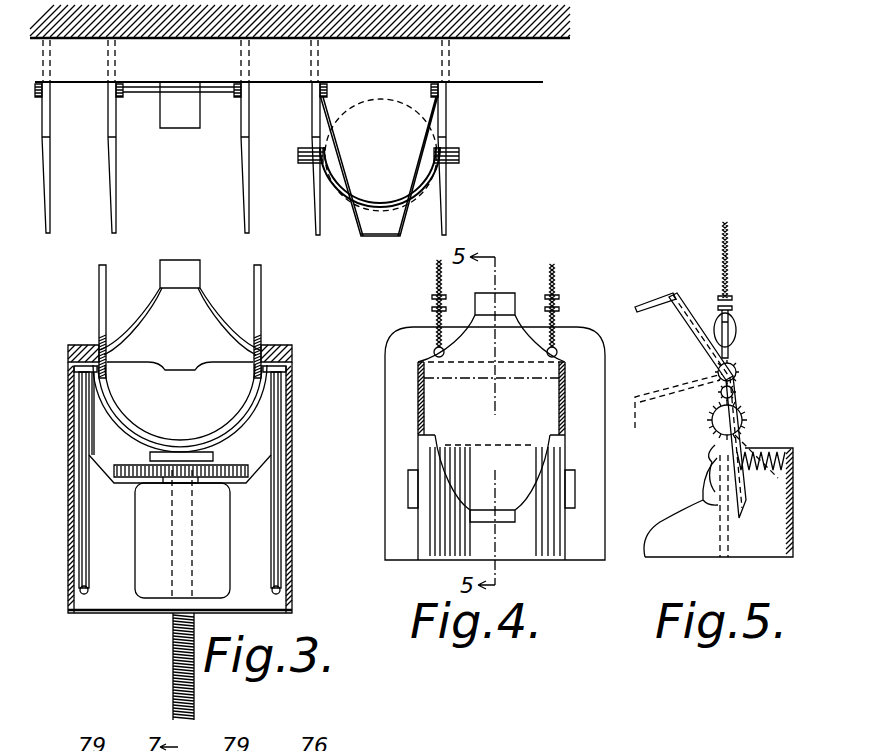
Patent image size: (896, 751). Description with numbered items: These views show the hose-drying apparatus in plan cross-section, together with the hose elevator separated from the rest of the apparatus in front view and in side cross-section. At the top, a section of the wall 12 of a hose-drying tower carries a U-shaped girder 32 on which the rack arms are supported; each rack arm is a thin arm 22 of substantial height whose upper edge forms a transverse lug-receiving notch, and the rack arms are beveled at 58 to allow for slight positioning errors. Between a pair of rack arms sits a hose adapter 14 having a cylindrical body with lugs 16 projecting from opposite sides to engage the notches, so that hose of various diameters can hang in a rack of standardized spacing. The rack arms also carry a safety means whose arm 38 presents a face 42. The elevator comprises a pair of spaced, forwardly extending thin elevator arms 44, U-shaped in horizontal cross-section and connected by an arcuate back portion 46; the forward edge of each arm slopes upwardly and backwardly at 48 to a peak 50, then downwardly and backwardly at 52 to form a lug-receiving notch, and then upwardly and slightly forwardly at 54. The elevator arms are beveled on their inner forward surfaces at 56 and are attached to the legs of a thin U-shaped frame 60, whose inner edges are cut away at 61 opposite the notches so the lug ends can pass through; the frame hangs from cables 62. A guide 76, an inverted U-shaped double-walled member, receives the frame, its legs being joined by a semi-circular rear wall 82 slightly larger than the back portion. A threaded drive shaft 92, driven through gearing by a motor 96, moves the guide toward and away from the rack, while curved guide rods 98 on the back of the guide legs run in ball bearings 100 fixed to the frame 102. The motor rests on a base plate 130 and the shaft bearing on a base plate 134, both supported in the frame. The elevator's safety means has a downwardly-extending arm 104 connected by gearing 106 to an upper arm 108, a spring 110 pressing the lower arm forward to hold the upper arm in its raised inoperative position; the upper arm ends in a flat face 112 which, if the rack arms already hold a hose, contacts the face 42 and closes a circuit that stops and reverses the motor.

In FIG. 3, the wall 12 is at (553, 40).
In FIG. 3, the U-shaped girder 32 is at (507, 84).
In FIG. 3, the bevel 58 is at (108, 213).
In FIG. 3, the face 42 is at (172, 108).
In FIG. 3, the thin arm 22 is at (312, 128).
In FIG. 3, the arm 38 is at (408, 137).
In FIG. 3, the hose adapter 14 is at (428, 190).
In FIG. 3, the lugs 16 is at (459, 155).
In FIG. 3, the flat face 112 is at (203, 243).
In FIG. 4, the flat face 112 is at (505, 298).
In FIG. 5, the flat face 112 is at (650, 298).
In FIG. 3, the upper arm 108 is at (199, 326).
In FIG. 4, the upper arm 108 is at (475, 338).
In FIG. 5, the upper arm 108 is at (701, 308).
In FIG. 3, the arcuate back portion 46 is at (245, 403).
In FIG. 4, the arcuate back portion 46 is at (423, 483).
In FIG. 5, the arcuate back portion 46 is at (794, 460).
In FIG. 3, the bevel 56 is at (105, 300).
In FIG. 3, the guide 76 is at (68, 350).
In FIG. 3, the elevator arms 44 is at (261, 312).
In FIG. 4, the elevator arms 44 is at (425, 558).
In FIG. 5, the elevator arms 44 is at (650, 558).
In FIG. 3, the U-shaped frame 60 is at (272, 348).
In FIG. 4, the U-shaped frame 60 is at (578, 333).
In FIG. 5, the U-shaped frame 60 is at (735, 345).
In FIG. 3, the bearings 100 is at (74, 372).
In FIG. 3, the base plate 134 is at (97, 433).
In FIG. 3, the semi-circular rear wall 82 is at (250, 425).
In FIG. 3, the frame 102 is at (290, 472).
In FIG. 3, the guide rods 98 is at (86, 566).
In FIG. 3, the motor 96 is at (150, 568).
In FIG. 3, the base plate 130 is at (118, 605).
In FIG. 3, the drive shaft 92 is at (173, 672).
In FIG. 4, the gearing 106 is at (565, 392).
In FIG. 5, the gearing 106 is at (740, 388).
In FIG. 4, the cables 62 is at (432, 280).
In FIG. 5, the cables 62 is at (728, 246).
In FIG. 4, the downwardly-extending arm 104 is at (478, 467).
In FIG. 5, the downwardly-extending arm 104 is at (670, 396).
In FIG. 4, the cut-away 61 is at (411, 502).
In FIG. 5, the spring 110 is at (762, 448).
In FIG. 5, the sloping forward edge 48 is at (668, 535).
In FIG. 5, the peak 50 is at (708, 500).
In FIG. 5, the notch edge 52 is at (715, 478).
In FIG. 5, the rear notch edge 54 is at (718, 452).